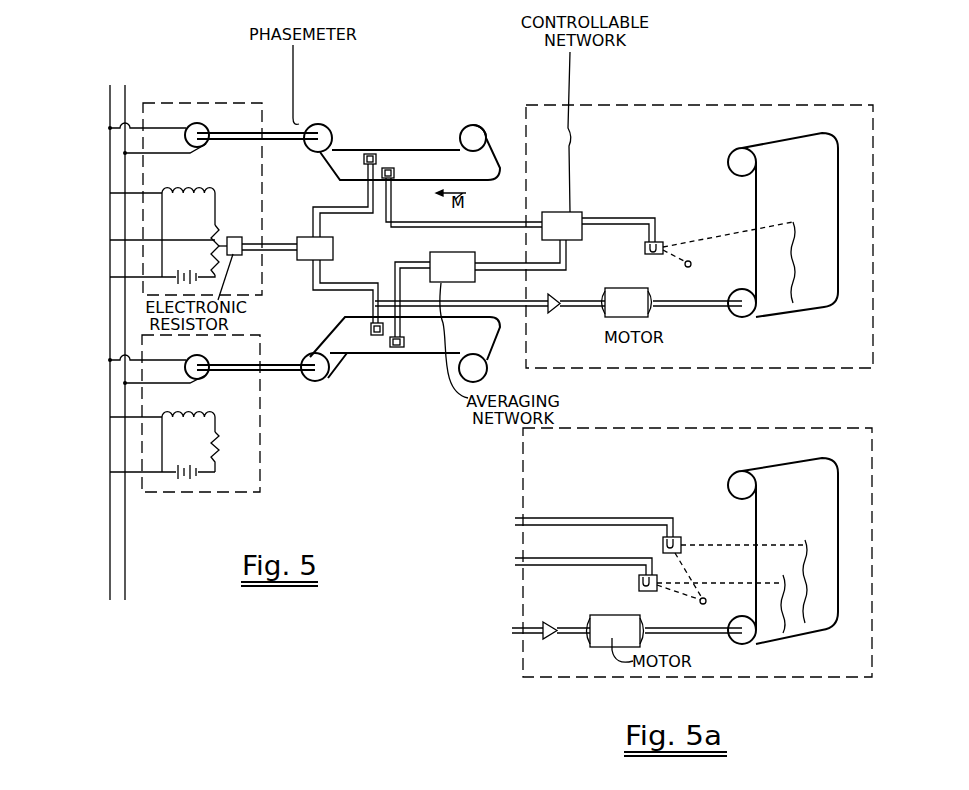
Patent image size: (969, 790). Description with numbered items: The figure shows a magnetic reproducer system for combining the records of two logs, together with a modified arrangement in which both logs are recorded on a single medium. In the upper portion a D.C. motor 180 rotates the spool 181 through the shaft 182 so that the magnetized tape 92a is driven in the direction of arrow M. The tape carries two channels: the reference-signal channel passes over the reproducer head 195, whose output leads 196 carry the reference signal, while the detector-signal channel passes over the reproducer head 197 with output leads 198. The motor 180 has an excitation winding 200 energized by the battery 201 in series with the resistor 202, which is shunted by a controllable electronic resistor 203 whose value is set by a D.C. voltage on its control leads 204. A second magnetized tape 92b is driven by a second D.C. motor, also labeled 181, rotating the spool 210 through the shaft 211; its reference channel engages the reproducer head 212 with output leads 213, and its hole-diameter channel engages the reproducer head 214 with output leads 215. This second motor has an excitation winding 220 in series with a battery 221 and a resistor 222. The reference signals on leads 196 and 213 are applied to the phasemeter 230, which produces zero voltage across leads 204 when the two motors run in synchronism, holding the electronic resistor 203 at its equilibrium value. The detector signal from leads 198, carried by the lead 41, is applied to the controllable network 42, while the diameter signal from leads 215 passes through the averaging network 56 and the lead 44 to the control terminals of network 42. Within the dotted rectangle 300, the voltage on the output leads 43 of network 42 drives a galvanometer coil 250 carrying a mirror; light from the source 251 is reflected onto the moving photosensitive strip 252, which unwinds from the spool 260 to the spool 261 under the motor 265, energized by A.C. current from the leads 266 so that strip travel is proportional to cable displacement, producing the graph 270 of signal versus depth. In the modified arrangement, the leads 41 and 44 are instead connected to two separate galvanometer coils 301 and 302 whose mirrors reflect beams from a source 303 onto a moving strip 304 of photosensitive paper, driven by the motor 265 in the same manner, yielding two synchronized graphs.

In FIG. 5, the D.C. motor 180 is at (167, 107).
In FIG. 5, the shaft 182 is at (235, 124).
In FIG. 5, the spool 181 is at (318, 124).
In FIG. 5, the reproducer head 195 is at (372, 152).
In FIG. 5, the reproducer head 197 is at (398, 167).
In FIG. 5, the magnetized tape 92a is at (437, 150).
In FIG. 5, the excitation winding 200 is at (110, 193).
In FIG. 5, the resistor 202 is at (110, 240).
In FIG. 5, the battery 201 is at (110, 277).
In FIG. 5, the controllable electronic resistor 203 is at (242, 236).
In FIG. 5, the control leads 204 is at (277, 249).
In FIG. 5, the phasemeter 230 is at (315, 248).
In FIG. 5, the output leads 213 is at (348, 288).
In FIG. 5, the output leads 215 is at (402, 258).
In FIG. 5, the output leads 196 is at (366, 197).
In FIG. 5, the output leads 198 is at (394, 192).
In FIG. 5, the lead 41 is at (503, 220).
In FIG. 5A, the lead 41 is at (515, 518).
In FIG. 5, the lead 44 is at (503, 267).
In FIG. 5A, the lead 44 is at (515, 558).
In FIG. 5, the output leads 43 is at (603, 222).
In FIG. 5, the controllable network 42 is at (562, 226).
In FIG. 5, the averaging network 56 is at (452, 267).
In FIG. 5, the galvanometer coil 250 is at (645, 249).
In FIG. 5, the light source 251 is at (691, 264).
In FIG. 5, the spool 261 is at (735, 148).
In FIG. 5, the photosensitive strip 252 is at (830, 172).
In FIG. 5, the graph 270 is at (795, 239).
In FIG. 5, the controllable network 300 is at (873, 135).
In FIG. 5A, the controllable network 300 is at (872, 463).
In FIG. 5, the spool 260 is at (742, 318).
In FIG. 5, the motor 265 is at (632, 330).
In FIG. 5, the leads 266 is at (573, 308).
In FIG. 5, the spool 210 is at (308, 352).
In FIG. 5, the shaft 211 is at (278, 372).
In FIG. 5, the magnetized tape 92b is at (347, 356).
In FIG. 5, the reproducer head 212 is at (376, 336).
In FIG. 5, the reproducer head 214 is at (400, 348).
In FIG. 5, the excitation winding 220 is at (110, 417).
In FIG. 5, the battery 221 is at (110, 472).
In FIG. 5, the resistor 222 is at (223, 446).
In FIG. 5A, the galvanometer coil 301 is at (689, 538).
In FIG. 5A, the galvanometer coil 302 is at (639, 583).
In FIG. 5A, the light source 303 is at (699, 604).
In FIG. 5A, the strip of photosensitive paper 304 is at (830, 510).